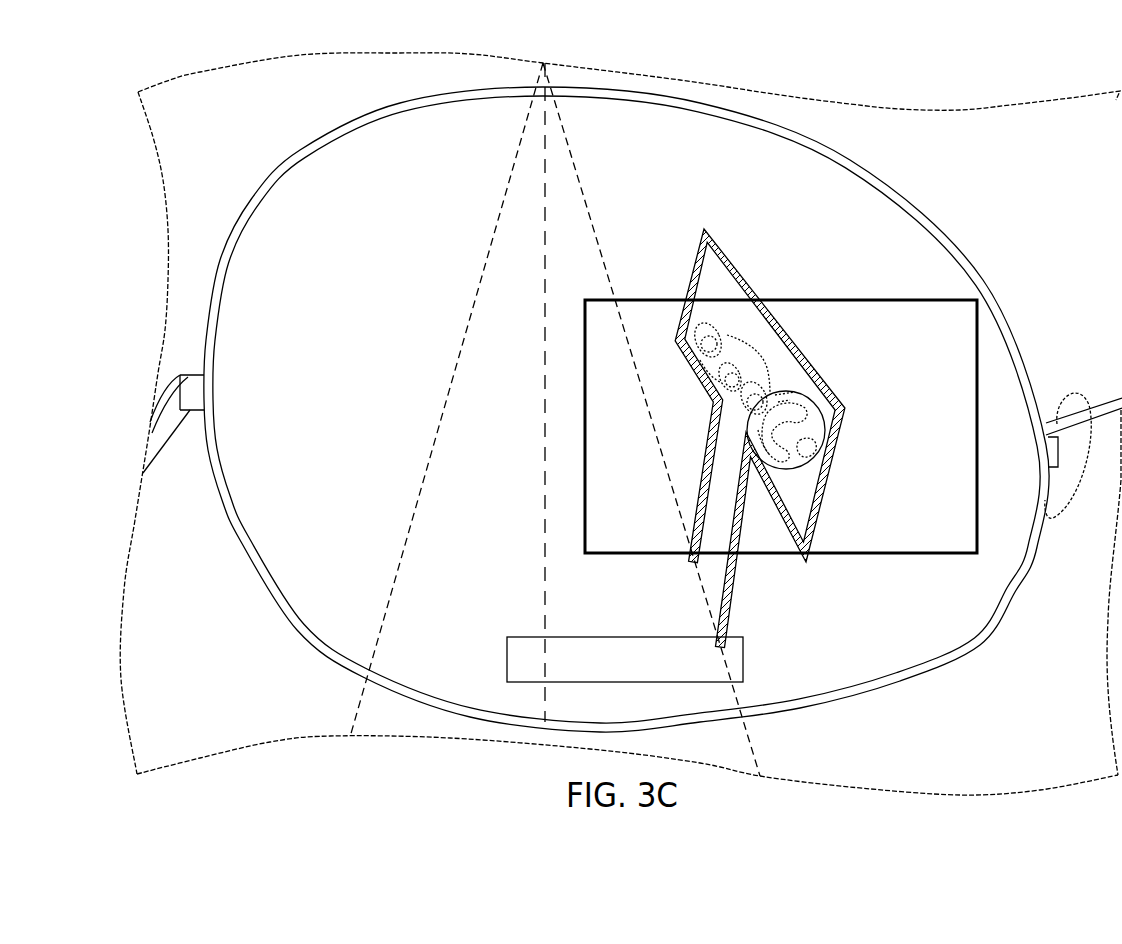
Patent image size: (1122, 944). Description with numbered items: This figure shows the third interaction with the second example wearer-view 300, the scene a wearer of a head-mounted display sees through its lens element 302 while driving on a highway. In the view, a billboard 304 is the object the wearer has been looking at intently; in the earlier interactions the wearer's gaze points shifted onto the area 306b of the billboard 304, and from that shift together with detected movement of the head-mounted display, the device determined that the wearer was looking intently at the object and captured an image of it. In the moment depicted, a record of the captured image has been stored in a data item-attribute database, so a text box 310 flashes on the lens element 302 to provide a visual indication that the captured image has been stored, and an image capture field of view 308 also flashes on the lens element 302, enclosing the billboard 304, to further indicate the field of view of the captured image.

The second example wearer-view 300 is at (920, 172).
The lens element 302 is at (930, 217).
The billboard 304 is at (836, 443).
The area 306b is at (805, 385).
The image capture field of view 308 is at (837, 300).
The text box 310 is at (746, 655).